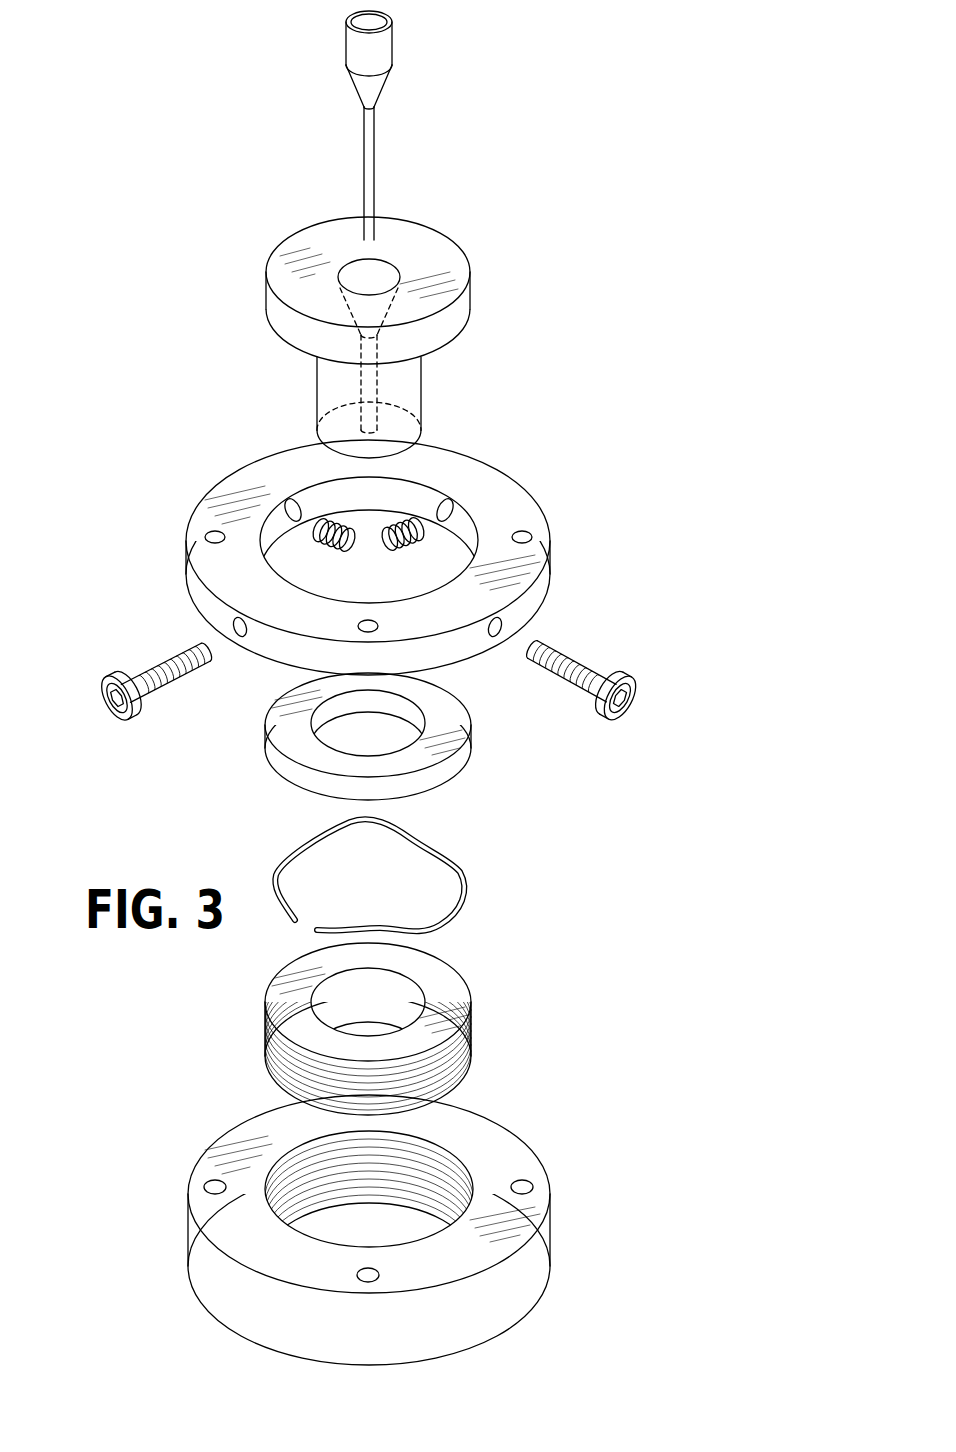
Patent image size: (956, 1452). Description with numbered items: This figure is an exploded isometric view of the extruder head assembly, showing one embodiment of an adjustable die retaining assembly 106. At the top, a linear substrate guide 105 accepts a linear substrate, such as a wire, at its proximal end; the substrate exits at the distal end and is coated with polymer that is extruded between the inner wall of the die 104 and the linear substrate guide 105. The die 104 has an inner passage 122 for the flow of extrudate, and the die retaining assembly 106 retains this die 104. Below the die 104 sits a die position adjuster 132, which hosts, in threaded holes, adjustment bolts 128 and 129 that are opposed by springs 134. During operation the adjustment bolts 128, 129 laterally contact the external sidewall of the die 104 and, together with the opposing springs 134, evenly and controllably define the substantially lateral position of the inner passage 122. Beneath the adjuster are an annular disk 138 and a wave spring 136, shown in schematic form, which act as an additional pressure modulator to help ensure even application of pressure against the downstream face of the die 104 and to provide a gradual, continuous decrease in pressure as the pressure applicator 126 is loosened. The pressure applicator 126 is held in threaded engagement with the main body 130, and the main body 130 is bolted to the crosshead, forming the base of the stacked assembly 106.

The adjustable die retaining assembly 106 is at (176, 76).
The linear substrate guide 105 is at (384, 85).
The die 104 is at (470, 293).
The inner passage 122 is at (357, 272).
The die position adjuster 132 is at (550, 556).
The springs 134 is at (407, 550).
The adjustment bolt 129 is at (102, 710).
The adjustment bolt 128 is at (634, 711).
The annular disk 138 is at (490, 733).
The wave spring 136 is at (472, 886).
The pressure applicator 126 is at (477, 1036).
The main body 130 is at (550, 1243).